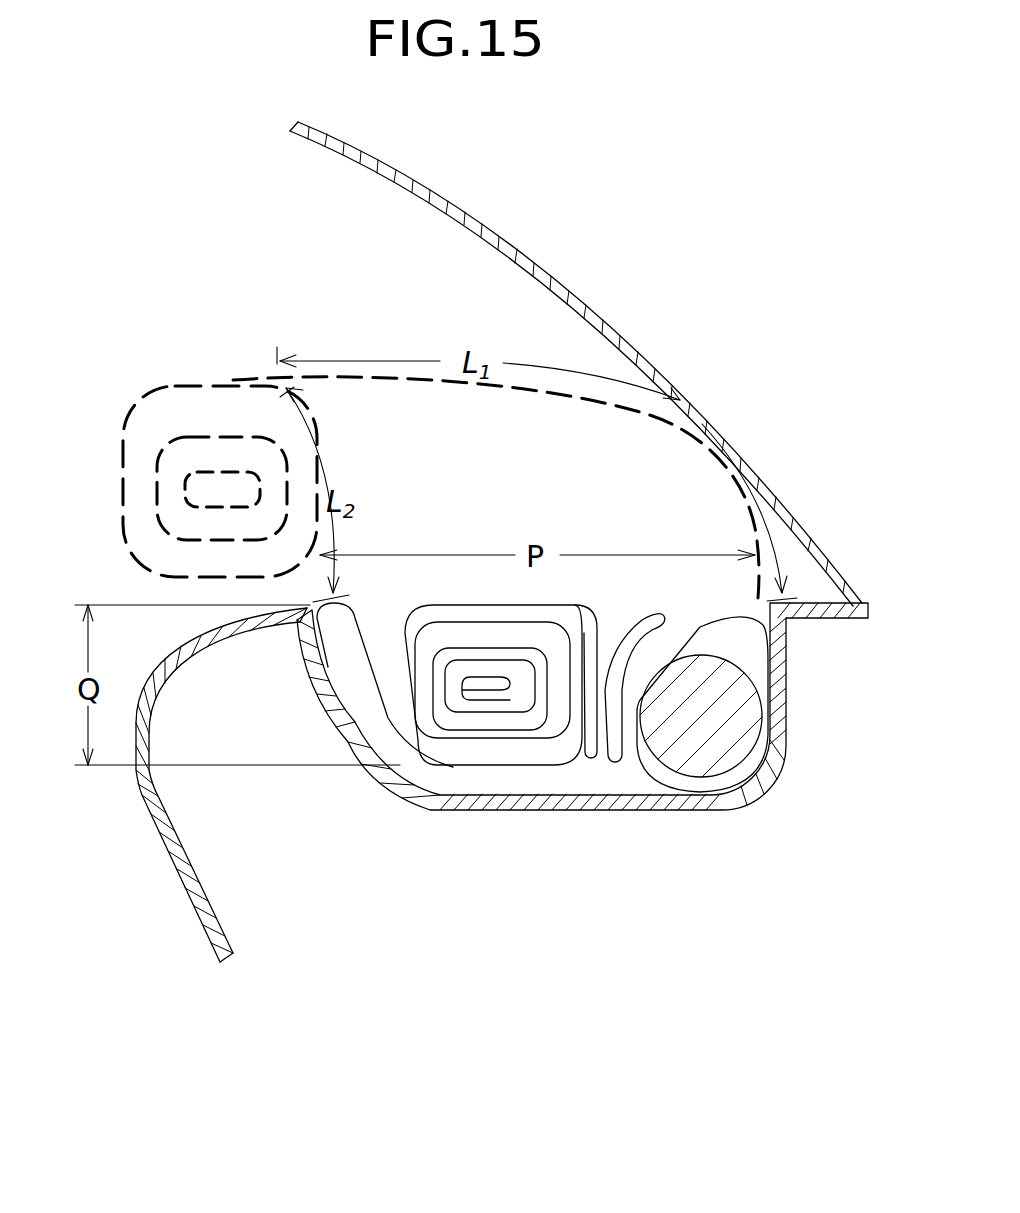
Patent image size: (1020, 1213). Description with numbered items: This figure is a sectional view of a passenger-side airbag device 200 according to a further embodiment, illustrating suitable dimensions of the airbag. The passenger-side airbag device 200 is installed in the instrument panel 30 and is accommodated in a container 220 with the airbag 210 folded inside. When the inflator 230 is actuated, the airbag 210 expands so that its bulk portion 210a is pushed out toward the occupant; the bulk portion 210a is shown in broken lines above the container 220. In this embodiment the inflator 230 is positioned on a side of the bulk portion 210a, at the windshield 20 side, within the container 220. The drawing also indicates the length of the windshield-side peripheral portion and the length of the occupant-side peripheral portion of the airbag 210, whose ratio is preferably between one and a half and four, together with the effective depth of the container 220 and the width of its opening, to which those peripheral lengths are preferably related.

The windshield 20 is at (587, 313).
The instrument panel 30 is at (203, 934).
The passenger-side airbag device 200 is at (582, 780).
The airbag 210 is at (467, 768).
The bulk portion 210a is at (138, 407).
The container 220 is at (784, 770).
The inflator 230 is at (683, 766).